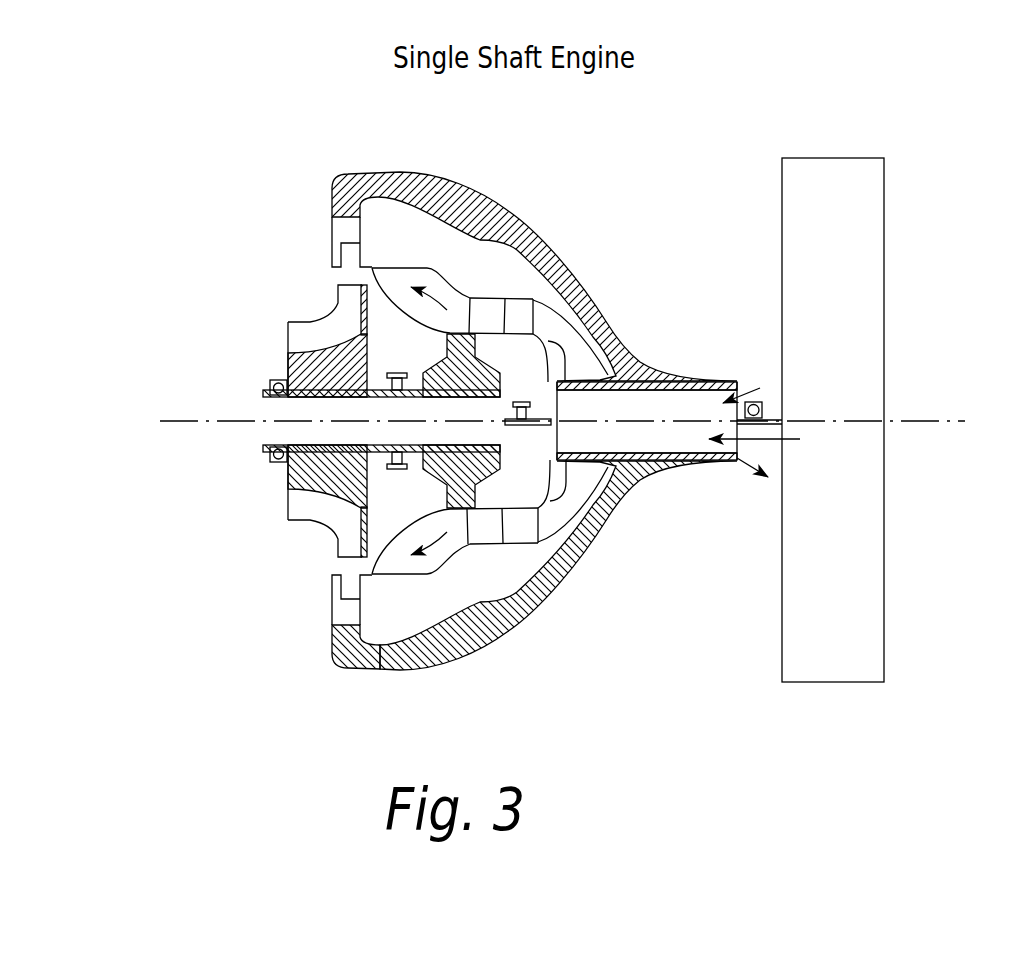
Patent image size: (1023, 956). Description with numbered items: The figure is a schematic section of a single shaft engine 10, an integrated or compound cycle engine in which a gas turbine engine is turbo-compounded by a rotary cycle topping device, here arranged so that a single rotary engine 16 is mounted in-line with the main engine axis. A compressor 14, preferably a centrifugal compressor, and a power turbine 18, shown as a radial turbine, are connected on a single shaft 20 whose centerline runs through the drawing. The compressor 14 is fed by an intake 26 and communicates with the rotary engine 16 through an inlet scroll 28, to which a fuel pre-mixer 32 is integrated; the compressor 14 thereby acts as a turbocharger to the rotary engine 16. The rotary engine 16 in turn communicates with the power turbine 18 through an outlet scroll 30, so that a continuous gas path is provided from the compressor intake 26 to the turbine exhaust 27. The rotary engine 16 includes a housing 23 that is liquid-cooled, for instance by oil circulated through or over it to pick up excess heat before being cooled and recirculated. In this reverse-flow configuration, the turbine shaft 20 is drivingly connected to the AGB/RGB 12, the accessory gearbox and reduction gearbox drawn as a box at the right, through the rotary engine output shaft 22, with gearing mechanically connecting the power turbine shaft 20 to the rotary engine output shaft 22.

The single shaft engine 10 is at (262, 538).
The AGB/RGB 12 is at (888, 322).
The compressor 14 is at (325, 503).
The rotary engine 16 is at (670, 407).
The power turbine 18 is at (463, 527).
The shaft 20 is at (313, 397).
The rotary engine output shaft 22 is at (772, 415).
The housing 23 is at (720, 381).
The intake 26 is at (283, 333).
The turbine exhaust 27 is at (403, 262).
The inlet scroll 28 is at (347, 200).
The outlet scroll 30 is at (607, 470).
The fuel pre-mixer 32 is at (651, 498).